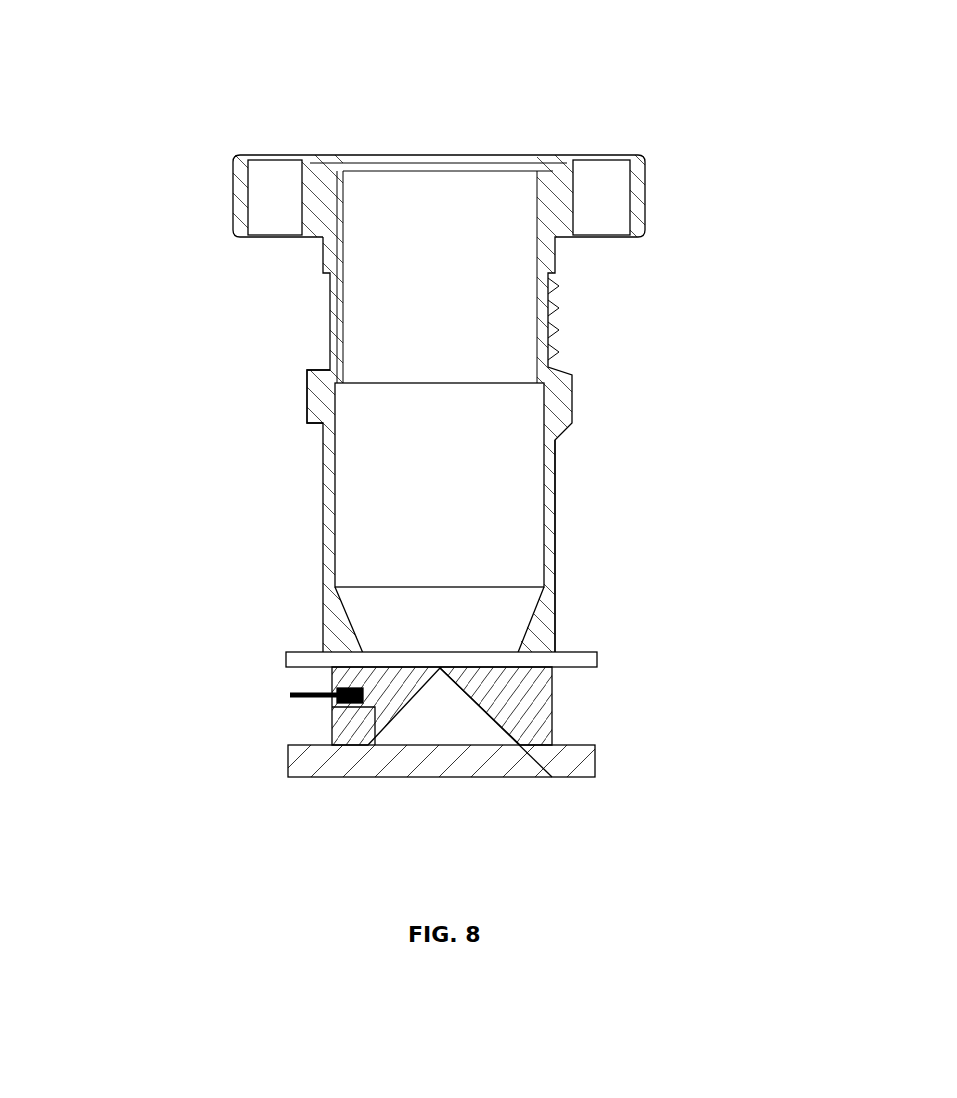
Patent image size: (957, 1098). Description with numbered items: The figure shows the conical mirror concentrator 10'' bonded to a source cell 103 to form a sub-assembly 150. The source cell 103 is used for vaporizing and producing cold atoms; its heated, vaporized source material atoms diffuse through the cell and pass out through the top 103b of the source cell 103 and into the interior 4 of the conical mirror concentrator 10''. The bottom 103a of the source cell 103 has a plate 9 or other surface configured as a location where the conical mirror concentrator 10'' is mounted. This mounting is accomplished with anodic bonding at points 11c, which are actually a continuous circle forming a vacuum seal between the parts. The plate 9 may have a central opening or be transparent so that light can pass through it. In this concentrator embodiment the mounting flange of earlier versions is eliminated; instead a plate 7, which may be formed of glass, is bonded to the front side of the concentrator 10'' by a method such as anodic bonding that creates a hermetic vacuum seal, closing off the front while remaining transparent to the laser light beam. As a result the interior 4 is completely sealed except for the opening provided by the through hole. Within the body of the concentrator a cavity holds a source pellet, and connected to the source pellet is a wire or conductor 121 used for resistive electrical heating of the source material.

The sub-assembly 150 is at (101, 95).
The source cell 103 is at (570, 342).
The top of the source cell 103b is at (303, 393).
The bottom of the source cell 103a is at (580, 632).
The anodic bonding points 11c is at (335, 662).
The plate 9 is at (597, 652).
The conical mirror concentrator 10'' is at (565, 706).
The interior 4 is at (482, 735).
The wire or conductor 121 is at (330, 691).
The plate 7 is at (370, 777).